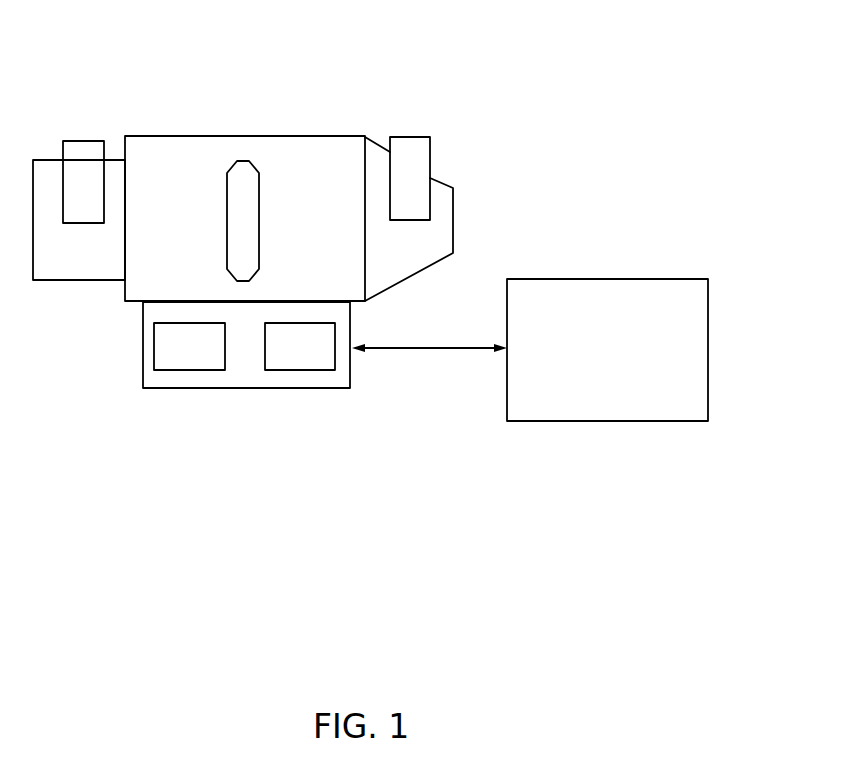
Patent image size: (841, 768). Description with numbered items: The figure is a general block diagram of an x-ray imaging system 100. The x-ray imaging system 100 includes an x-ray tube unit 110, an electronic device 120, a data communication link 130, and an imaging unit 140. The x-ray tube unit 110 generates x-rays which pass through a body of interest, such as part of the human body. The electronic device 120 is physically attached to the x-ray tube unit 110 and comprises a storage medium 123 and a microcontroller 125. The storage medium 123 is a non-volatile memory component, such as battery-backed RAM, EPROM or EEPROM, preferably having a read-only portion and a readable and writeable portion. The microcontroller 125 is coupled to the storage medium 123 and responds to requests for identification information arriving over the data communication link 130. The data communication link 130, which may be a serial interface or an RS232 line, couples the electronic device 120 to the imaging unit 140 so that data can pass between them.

The x-ray imaging system 100 is at (90, 94).
The x-ray tube unit 110 is at (282, 136).
The electronic device 120 is at (143, 352).
The storage medium 123 is at (202, 370).
The microcontroller 125 is at (313, 370).
The data communication link 130 is at (452, 349).
The imaging unit 140 is at (708, 311).